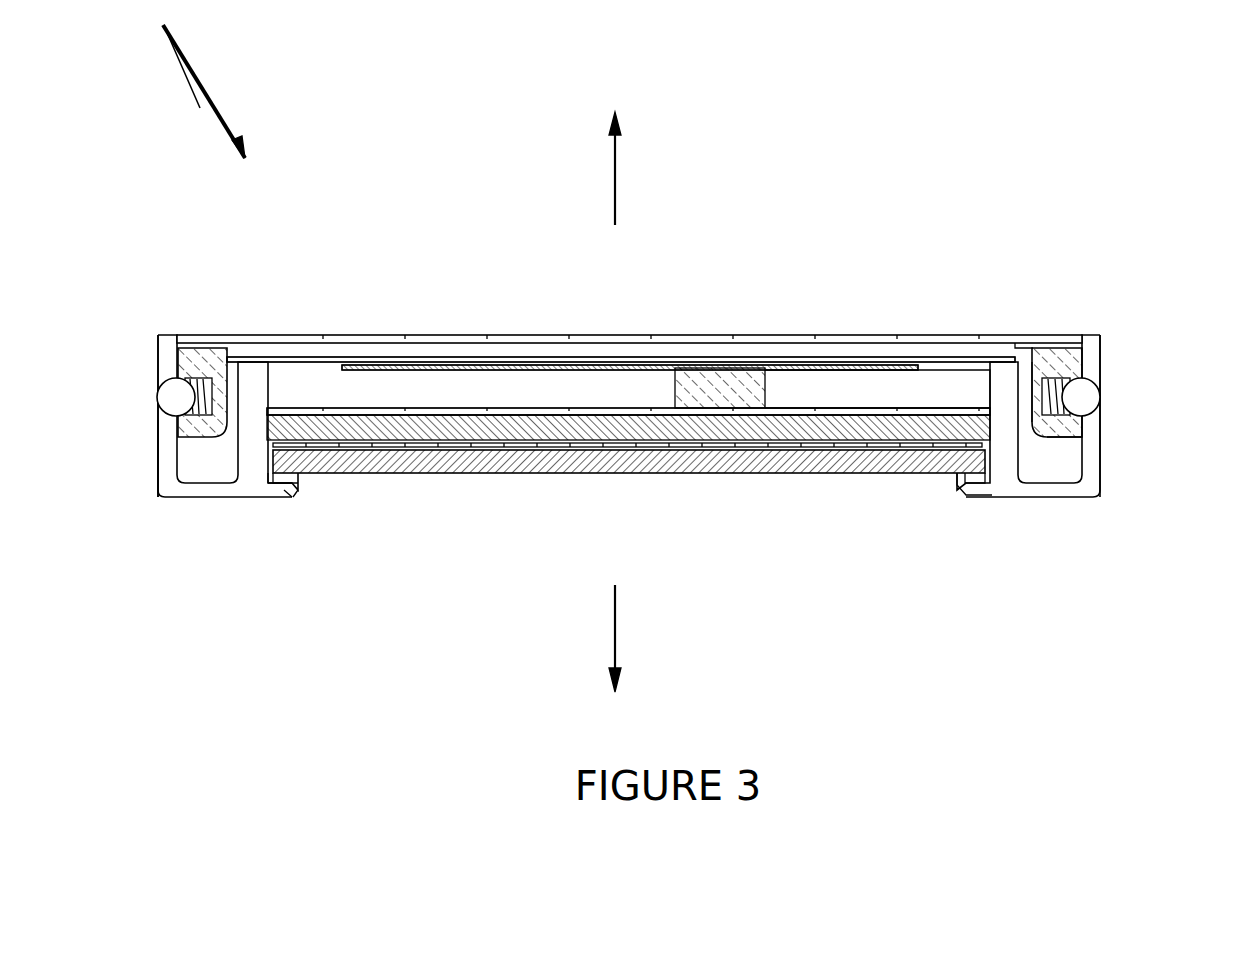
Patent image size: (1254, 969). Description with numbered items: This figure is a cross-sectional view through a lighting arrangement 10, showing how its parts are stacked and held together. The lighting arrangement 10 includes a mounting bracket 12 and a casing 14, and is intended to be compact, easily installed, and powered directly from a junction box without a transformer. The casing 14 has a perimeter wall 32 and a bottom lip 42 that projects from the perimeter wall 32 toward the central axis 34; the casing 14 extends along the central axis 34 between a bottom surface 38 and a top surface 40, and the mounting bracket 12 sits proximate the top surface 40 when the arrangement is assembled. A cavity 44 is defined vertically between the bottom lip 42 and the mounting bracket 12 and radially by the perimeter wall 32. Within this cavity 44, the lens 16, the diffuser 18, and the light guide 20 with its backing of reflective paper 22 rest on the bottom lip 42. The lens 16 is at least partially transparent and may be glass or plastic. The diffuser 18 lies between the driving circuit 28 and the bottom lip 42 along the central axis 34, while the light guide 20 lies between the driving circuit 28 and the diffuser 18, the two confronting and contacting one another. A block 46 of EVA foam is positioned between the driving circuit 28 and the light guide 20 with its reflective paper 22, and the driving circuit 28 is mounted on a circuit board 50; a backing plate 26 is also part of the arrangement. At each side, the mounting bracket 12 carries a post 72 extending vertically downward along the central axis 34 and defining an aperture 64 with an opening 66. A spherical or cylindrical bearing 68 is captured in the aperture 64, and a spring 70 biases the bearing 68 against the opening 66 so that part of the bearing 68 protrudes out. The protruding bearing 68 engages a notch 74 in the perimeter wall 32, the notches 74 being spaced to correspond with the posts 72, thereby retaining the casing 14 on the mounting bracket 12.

The lighting arrangement 10 is at (200, 108).
The mounting bracket 12 is at (475, 337).
The casing 14 is at (178, 490).
The lens 16 is at (352, 475).
The diffuser 18 is at (496, 448).
The light guide 20 is at (390, 414).
The backing of reflective paper 22 is at (298, 411).
The backing plate 26 is at (553, 360).
The driving circuit 28 is at (650, 365).
The circuit board 50 is at (630, 367).
The perimeter wall 32 is at (165, 475).
The central axis 34 is at (615, 202).
The bottom surface 38 is at (213, 497).
The top surface 40 is at (170, 337).
The bottom lip 42 is at (280, 490).
The cavity 44 is at (928, 383).
The block of EVA foam 46 is at (737, 372).
The aperture 64 is at (1063, 418).
The opening 66 is at (1078, 374).
The bearing 68 is at (1085, 397).
The spring 70 is at (1058, 400).
The post 72 is at (1052, 432).
The notch 74 is at (167, 435).